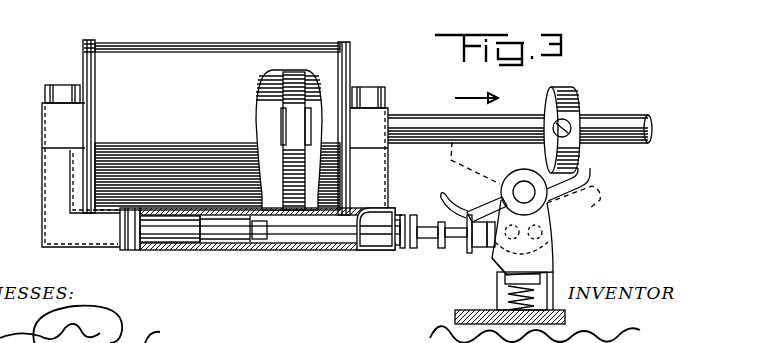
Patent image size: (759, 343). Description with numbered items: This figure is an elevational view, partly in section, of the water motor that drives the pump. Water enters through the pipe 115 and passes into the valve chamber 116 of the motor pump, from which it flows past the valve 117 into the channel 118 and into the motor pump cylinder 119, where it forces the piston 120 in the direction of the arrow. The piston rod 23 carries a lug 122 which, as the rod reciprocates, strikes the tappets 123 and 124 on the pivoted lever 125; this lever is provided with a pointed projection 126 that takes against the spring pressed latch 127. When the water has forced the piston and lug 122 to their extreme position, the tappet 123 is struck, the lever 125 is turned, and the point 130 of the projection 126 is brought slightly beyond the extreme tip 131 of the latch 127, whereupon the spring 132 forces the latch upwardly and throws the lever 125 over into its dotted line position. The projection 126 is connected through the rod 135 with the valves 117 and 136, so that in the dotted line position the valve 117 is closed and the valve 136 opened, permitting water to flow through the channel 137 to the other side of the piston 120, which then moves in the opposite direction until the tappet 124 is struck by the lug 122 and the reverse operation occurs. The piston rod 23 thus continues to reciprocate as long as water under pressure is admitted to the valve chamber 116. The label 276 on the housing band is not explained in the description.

The housing top band 276 is at (168, 62).
The channel 118 is at (80, 228).
The motor pump cylinder 119 is at (268, 92).
The piston 120 is at (295, 112).
The piston rod 23 is at (412, 125).
The lug 122 is at (562, 95).
The tappet 123 is at (584, 160).
The tappet 124 is at (447, 198).
The pivoted lever 125 is at (568, 210).
The pointed projection 126 is at (558, 237).
The point 130 is at (560, 268).
The spring pressed latch 127 is at (548, 276).
The extreme tip 131 is at (488, 248).
The spring 132 is at (505, 292).
The channel 137 is at (325, 240).
The valve 117 is at (143, 242).
The valve chamber 116 is at (195, 240).
The pipe 115 is at (217, 237).
The valve 136 is at (265, 240).
The rod 135 is at (353, 240).